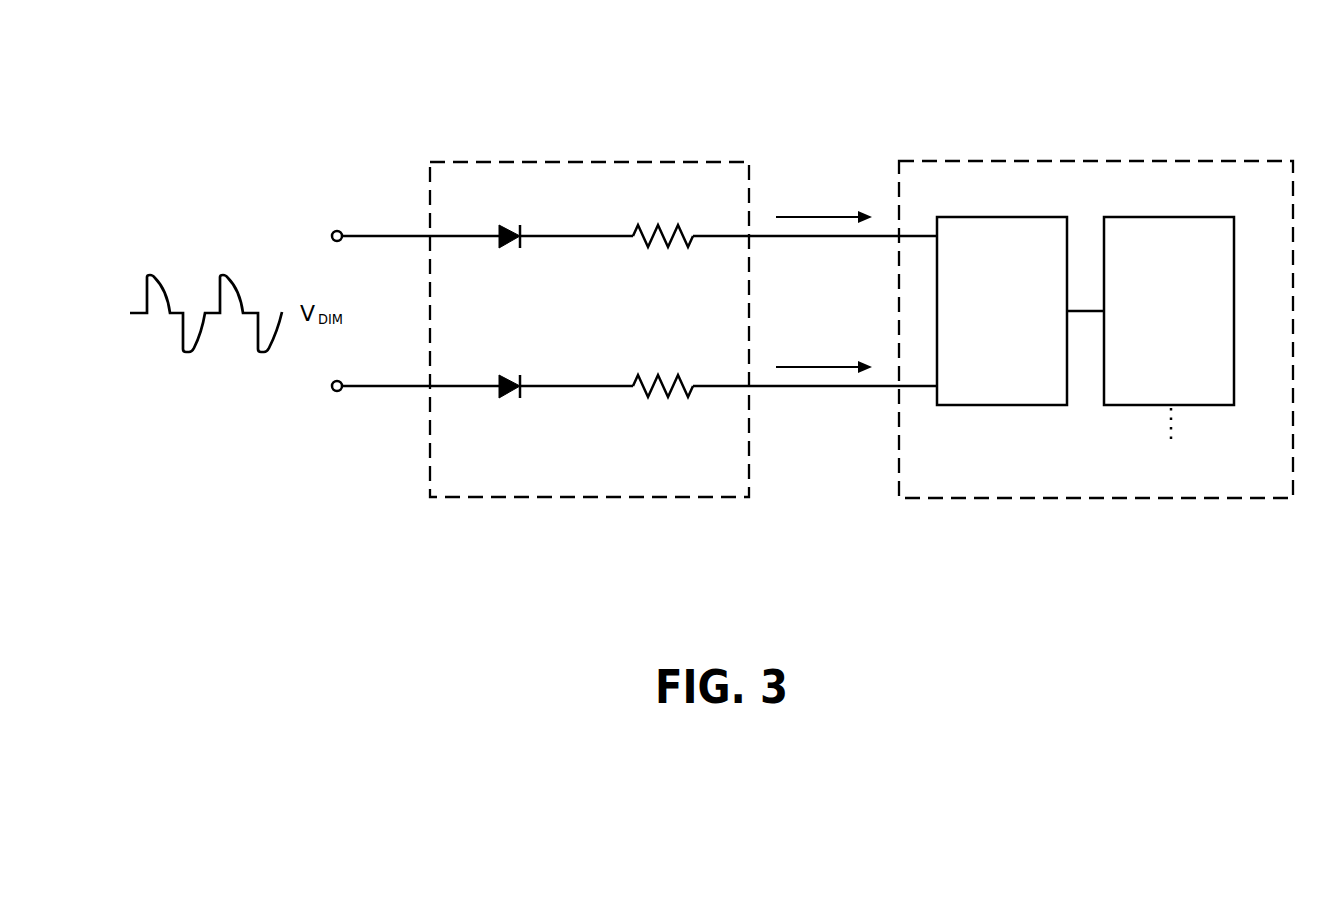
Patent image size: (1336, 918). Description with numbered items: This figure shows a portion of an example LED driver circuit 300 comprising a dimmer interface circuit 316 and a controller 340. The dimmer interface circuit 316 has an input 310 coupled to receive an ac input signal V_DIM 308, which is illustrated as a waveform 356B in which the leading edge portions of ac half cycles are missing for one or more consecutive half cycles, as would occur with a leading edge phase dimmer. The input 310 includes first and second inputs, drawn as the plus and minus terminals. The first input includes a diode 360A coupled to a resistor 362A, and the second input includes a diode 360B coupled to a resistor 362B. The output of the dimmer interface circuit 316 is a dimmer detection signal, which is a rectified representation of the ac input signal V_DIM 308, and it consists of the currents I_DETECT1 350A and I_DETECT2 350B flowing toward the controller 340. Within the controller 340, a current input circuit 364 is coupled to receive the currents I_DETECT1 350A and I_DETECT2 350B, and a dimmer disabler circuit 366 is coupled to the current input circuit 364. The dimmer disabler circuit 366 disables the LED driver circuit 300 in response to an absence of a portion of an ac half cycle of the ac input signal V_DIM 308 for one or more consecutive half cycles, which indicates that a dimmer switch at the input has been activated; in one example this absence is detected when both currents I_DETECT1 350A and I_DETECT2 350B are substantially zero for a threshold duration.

The LED driver circuit 300 is at (1260, 65).
The ac input signal V_DIM 308 is at (297, 270).
The input 310 is at (337, 230).
The dimmer interface circuit 316 is at (693, 499).
The controller 340 is at (1104, 359).
The current I_DETECT1 350A is at (815, 183).
The current I_DETECT2 350B is at (797, 340).
The waveform 356B is at (191, 367).
The diode 360A is at (511, 250).
The diode 360B is at (510, 400).
The resistor 362A is at (656, 249).
The resistor 362B is at (653, 399).
The current input circuit 364 is at (993, 407).
The dimmer disabler circuit 366 is at (1209, 407).